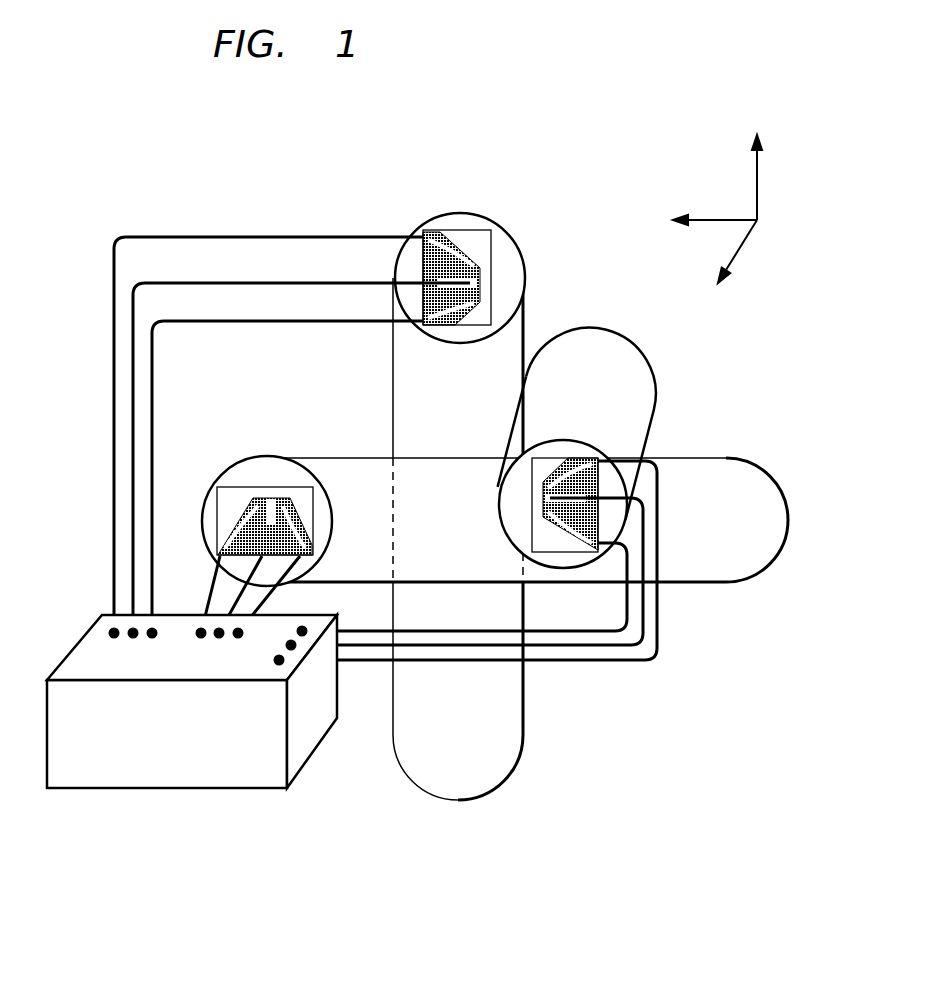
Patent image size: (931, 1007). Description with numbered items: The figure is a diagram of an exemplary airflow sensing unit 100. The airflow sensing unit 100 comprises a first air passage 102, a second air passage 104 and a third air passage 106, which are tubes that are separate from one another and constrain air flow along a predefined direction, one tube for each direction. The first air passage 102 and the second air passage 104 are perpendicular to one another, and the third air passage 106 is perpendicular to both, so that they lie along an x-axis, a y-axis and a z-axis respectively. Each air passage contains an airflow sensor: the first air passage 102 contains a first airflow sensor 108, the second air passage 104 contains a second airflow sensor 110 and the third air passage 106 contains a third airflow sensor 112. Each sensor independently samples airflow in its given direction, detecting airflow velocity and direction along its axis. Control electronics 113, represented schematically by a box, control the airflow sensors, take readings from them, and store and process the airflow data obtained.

The airflow sensing unit 100 is at (300, 108).
The first air passage 102 is at (723, 458).
The second air passage 104 is at (592, 327).
The third air passage 106 is at (505, 748).
The first airflow sensor 108 is at (270, 520).
The second airflow sensor 110 is at (563, 478).
The third airflow sensor 112 is at (447, 262).
The control electronics 113 is at (135, 789).